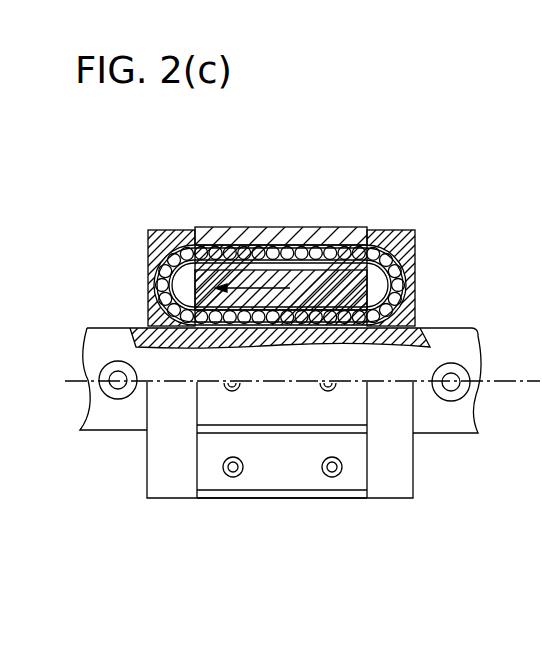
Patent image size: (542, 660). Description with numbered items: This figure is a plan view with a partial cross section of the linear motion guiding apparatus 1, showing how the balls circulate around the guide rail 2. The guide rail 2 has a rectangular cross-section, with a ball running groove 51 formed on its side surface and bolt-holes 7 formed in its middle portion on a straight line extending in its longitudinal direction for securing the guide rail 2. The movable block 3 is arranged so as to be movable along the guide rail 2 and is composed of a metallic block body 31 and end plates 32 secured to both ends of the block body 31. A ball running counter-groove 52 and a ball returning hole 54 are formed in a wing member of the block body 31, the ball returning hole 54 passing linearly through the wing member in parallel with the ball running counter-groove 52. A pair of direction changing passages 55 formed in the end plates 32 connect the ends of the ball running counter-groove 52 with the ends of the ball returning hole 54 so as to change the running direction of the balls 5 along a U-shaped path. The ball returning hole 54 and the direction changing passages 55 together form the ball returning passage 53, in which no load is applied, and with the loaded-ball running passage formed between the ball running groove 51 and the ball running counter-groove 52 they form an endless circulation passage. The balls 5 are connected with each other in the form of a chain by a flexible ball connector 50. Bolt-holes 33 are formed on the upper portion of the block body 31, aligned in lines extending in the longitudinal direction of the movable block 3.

The linear motion guiding apparatus 1 is at (440, 191).
The guide rail 2 is at (460, 425).
The movable block 3 is at (338, 218).
The balls 5 is at (528, 442).
The bolt-holes 7 is at (110, 383).
The block body 31 is at (242, 227).
The end plates 32 is at (167, 230).
The bolt-holes 33 is at (233, 477).
The flexible ball connector 50 is at (222, 346).
The ball running groove 51 is at (281, 346).
The ball running counter-groove 52 is at (153, 282).
The ball returning passage 53 is at (365, 237).
The ball returning hole 54 is at (290, 244).
The direction changing passages 55 is at (437, 278).